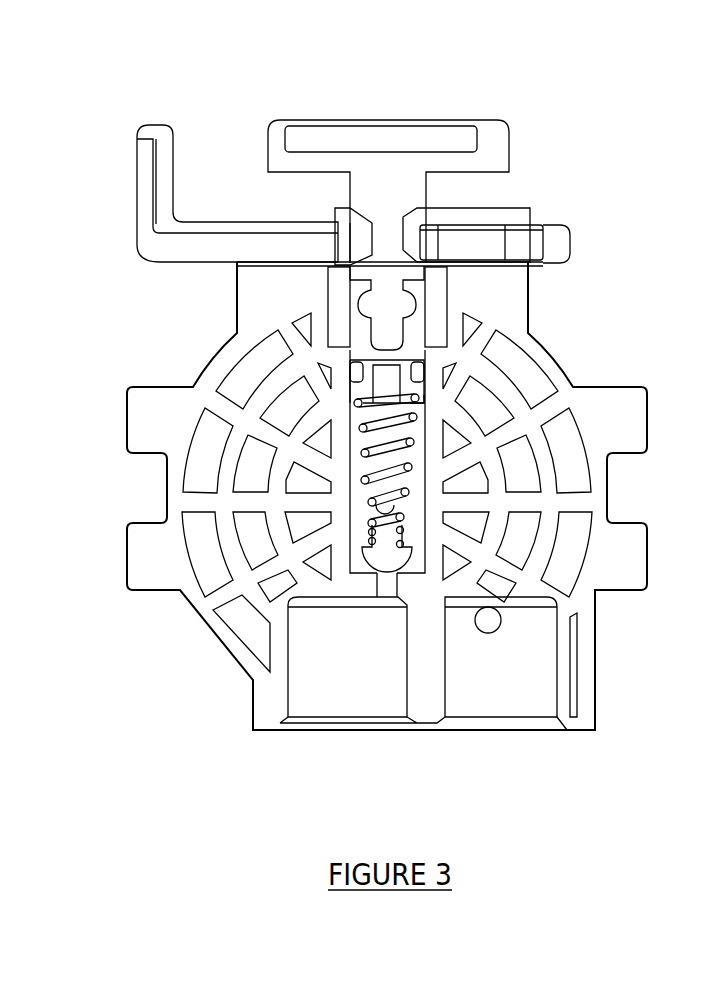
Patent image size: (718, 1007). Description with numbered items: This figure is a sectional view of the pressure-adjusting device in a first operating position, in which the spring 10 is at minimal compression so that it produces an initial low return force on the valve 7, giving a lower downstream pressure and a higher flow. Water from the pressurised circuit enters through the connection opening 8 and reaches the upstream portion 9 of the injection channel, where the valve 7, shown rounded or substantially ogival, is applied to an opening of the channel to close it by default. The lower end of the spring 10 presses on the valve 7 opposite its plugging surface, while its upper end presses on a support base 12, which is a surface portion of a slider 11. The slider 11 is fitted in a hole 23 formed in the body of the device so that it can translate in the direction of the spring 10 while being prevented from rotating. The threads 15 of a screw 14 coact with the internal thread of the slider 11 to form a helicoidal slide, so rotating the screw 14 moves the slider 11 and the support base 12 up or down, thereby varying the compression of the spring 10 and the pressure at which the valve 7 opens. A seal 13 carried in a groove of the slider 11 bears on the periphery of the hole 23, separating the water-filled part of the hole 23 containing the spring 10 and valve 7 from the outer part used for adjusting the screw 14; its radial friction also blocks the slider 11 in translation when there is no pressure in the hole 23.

The valve 7 is at (393, 563).
The connection opening 8 is at (322, 690).
The upstream portion of the injection channel 9 is at (375, 580).
The spring 10 is at (363, 423).
The slider 11 is at (400, 355).
The support base 12 is at (420, 398).
The seal 13 is at (350, 372).
The screw 14 is at (414, 93).
The threads 15 is at (397, 302).
The hole 23 is at (357, 517).